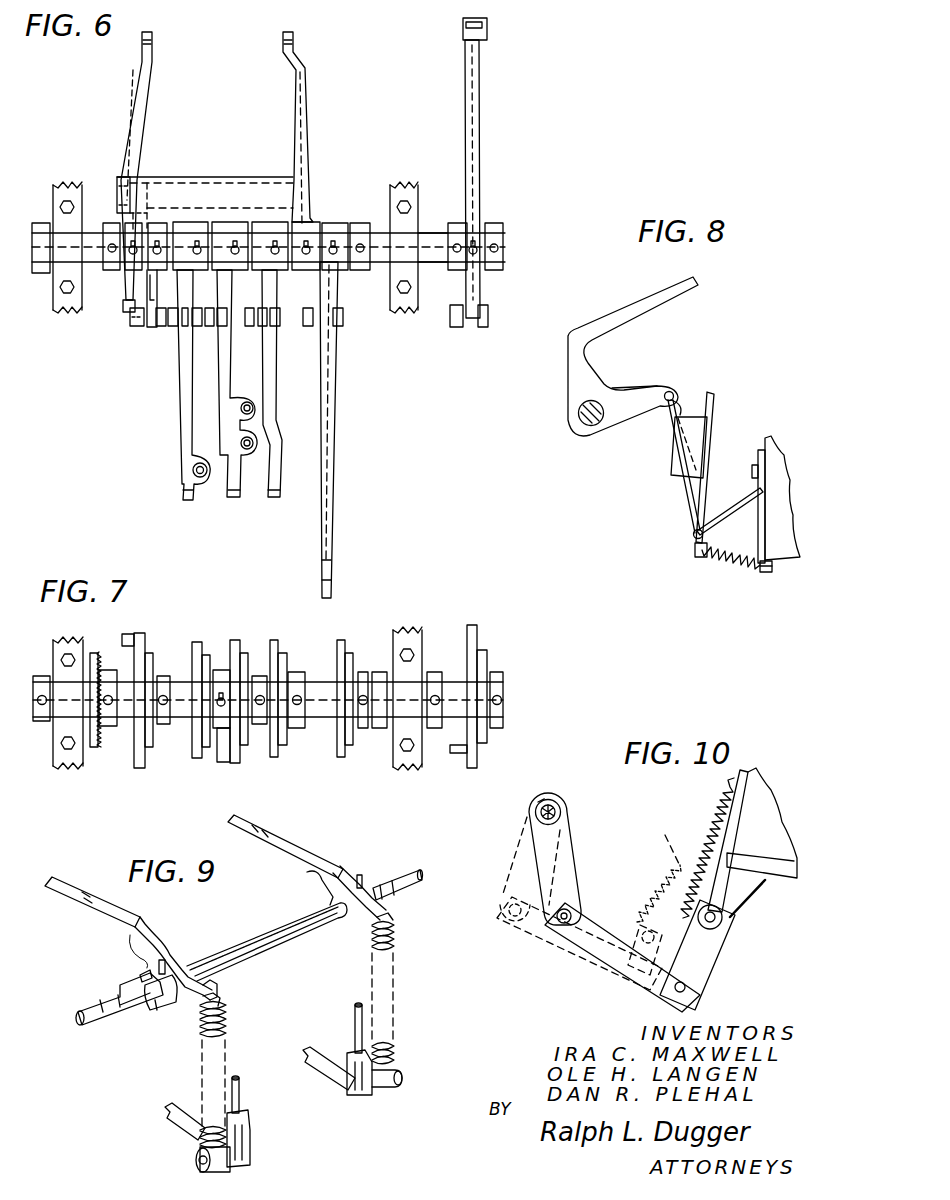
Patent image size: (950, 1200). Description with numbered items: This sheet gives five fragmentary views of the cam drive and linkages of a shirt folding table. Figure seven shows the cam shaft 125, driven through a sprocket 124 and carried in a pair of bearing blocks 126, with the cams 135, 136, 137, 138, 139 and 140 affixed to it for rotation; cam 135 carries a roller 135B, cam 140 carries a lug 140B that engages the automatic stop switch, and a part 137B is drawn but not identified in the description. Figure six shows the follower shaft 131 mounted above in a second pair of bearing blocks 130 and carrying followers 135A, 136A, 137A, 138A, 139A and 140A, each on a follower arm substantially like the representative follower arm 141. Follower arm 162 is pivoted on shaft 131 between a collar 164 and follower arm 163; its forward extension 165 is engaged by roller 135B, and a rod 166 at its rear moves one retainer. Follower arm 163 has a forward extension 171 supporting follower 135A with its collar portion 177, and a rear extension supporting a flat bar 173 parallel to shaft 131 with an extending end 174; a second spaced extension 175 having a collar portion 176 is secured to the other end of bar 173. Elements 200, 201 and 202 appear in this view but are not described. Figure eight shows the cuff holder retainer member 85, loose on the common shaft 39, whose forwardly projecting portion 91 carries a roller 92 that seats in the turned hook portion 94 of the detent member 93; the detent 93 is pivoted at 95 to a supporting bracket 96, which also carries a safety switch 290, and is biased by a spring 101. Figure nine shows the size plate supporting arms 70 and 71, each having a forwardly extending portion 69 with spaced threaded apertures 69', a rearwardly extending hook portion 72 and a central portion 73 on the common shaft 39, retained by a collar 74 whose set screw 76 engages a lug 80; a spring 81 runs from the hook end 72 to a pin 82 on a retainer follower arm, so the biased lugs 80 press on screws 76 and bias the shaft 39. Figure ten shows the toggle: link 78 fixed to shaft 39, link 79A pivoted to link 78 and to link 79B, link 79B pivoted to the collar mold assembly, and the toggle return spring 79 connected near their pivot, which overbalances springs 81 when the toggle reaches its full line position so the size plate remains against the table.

In FIG. 6, the bearing blocks 130 is at (62, 230).
In FIG. 6, the follower shaft 131 is at (432, 238).
In FIG. 6, the follower arm 162 is at (147, 66).
In FIG. 9, the follower arm 162 is at (318, 1054).
In FIG. 6, the follower arm 163 is at (298, 68).
In FIG. 6, the collar 164 is at (112, 270).
In FIG. 6, the forward extension 165 is at (125, 310).
In FIG. 6, the forward extension 171 is at (152, 296).
In FIG. 6, the flat bar 173 is at (232, 160).
In FIG. 6, the extending end 174 is at (120, 183).
In FIG. 6, the second spaced extension 175 is at (292, 136).
In FIG. 9, the second spaced extension 175 is at (180, 1123).
In FIG. 6, the collar portion 176 is at (306, 270).
In FIG. 9, the collar portion 176 is at (242, 1090).
In FIG. 6, the collar portion 177 is at (184, 308).
In FIG. 6, the lever 200 is at (467, 128).
In FIG. 6, the hub 201 is at (493, 226).
In FIG. 6, the hub 202 is at (455, 270).
In FIG. 6, the follower 135A is at (137, 327).
In FIG. 6, the follower 136A is at (190, 328).
In FIG. 6, the follower 137A is at (233, 328).
In FIG. 6, the follower 138A is at (275, 328).
In FIG. 6, the cam follower 139A is at (345, 318).
In FIG. 6, the follower 140A is at (458, 328).
In FIG. 6, the follower arm 141 is at (336, 420).
In FIG. 7, the sprocket 124 is at (93, 652).
In FIG. 7, the cam shaft 125 is at (318, 685).
In FIG. 7, the bearing blocks 126 is at (62, 675).
In FIG. 7, the cam 135 is at (140, 768).
In FIG. 7, the roller 135B is at (128, 634).
In FIG. 7, the cam 136 is at (195, 740).
In FIG. 7, the cam 137 is at (236, 763).
In FIG. 7, the hub 137B is at (222, 748).
In FIG. 7, the cam 138 is at (274, 757).
In FIG. 7, the cam 139 is at (341, 757).
In FIG. 7, the cam 140 is at (475, 755).
In FIG. 7, the lug 140B is at (458, 754).
In FIG. 8, the member 85 is at (560, 381).
In FIG. 8, the forwardly projecting portion 91 is at (650, 386).
In FIG. 8, the roller 92 is at (677, 392).
In FIG. 8, the detent member 93 is at (686, 491).
In FIG. 8, the turned hook portion 94 is at (714, 396).
In FIG. 8, the pivot 95 is at (692, 538).
In FIG. 8, the supporting bracket 96 is at (733, 518).
In FIG. 8, the spring 101 is at (735, 577).
In FIG. 8, the safety switch 290 is at (688, 447).
In FIG. 9, the common shaft 39 is at (272, 933).
In FIG. 9, the forwardly extending portion 69 is at (189, 873).
In FIG. 9, the threaded apertures 69' is at (183, 850).
In FIG. 9, the plate supporting arm 70 is at (265, 836).
In FIG. 9, the plate supporting arm 71 is at (122, 922).
In FIG. 9, the rearwardly extending portion 72 is at (217, 987).
In FIG. 9, the central portion 73 is at (167, 1003).
In FIG. 9, the collar 74 is at (140, 990).
In FIG. 9, the set screws 76 is at (168, 966).
In FIG. 9, the lugs 80 is at (140, 974).
In FIG. 9, the spring 81 is at (200, 1025).
In FIG. 9, the pin 82 is at (378, 1086).
In FIG. 9, the rod 166 is at (355, 1017).
In FIG. 10, the link 78 is at (565, 860).
In FIG. 10, the toggle return spring 79 is at (711, 840).
In FIG. 10, the link 79A is at (612, 958).
In FIG. 10, the link 79B is at (703, 960).